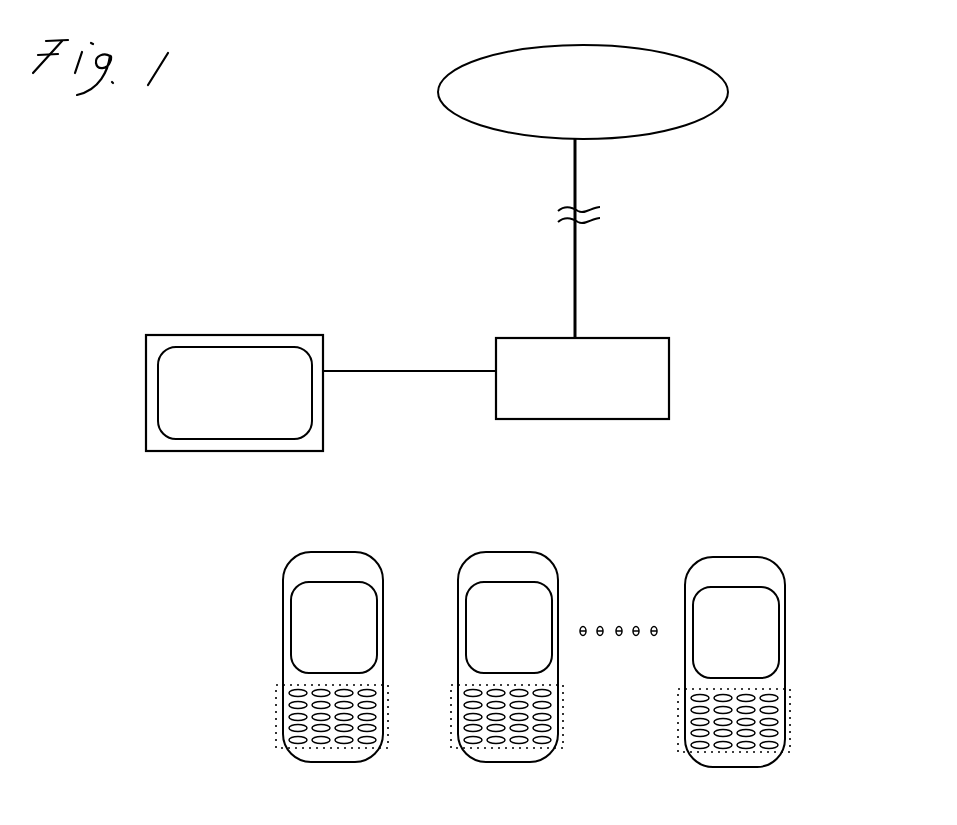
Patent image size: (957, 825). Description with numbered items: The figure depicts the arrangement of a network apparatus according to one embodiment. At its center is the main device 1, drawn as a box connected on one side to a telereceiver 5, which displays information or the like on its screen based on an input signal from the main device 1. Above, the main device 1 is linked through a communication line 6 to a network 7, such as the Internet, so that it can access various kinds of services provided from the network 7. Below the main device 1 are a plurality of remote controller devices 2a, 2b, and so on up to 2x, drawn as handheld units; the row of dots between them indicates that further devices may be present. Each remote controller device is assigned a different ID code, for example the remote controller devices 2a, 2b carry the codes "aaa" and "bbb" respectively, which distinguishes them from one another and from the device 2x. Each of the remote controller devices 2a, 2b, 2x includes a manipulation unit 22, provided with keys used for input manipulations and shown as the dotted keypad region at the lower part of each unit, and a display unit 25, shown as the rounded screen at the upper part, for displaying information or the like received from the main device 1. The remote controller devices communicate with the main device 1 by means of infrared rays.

The network 7 is at (573, 53).
The communication line 6 is at (577, 267).
The main device 1 is at (667, 344).
The telereceiver 5 is at (248, 331).
The display unit 25 is at (372, 622).
The manipulation unit 22 is at (385, 697).
The remote controller device 2a is at (333, 763).
The remote controller device 2b is at (508, 763).
The remote controller device 2x is at (735, 768).